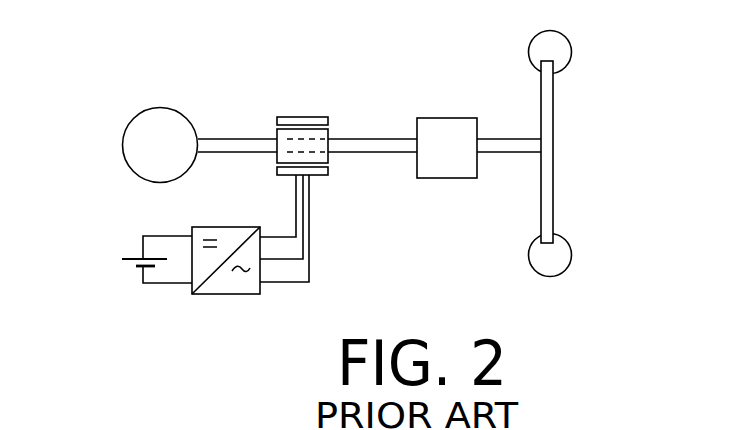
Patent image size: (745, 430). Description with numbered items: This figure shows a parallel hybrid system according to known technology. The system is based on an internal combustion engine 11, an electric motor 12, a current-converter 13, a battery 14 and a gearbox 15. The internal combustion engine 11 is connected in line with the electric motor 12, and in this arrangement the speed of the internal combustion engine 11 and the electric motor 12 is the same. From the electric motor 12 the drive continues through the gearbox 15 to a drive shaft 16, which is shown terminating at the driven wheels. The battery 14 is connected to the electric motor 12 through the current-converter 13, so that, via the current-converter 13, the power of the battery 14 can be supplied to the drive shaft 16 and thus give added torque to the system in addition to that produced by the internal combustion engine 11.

The internal combustion engine 11 is at (161, 107).
The electric motor 12 is at (305, 117).
The current-converter 13 is at (227, 294).
The battery 14 is at (132, 257).
The gearbox 15 is at (440, 118).
The drive shaft 16 is at (503, 137).